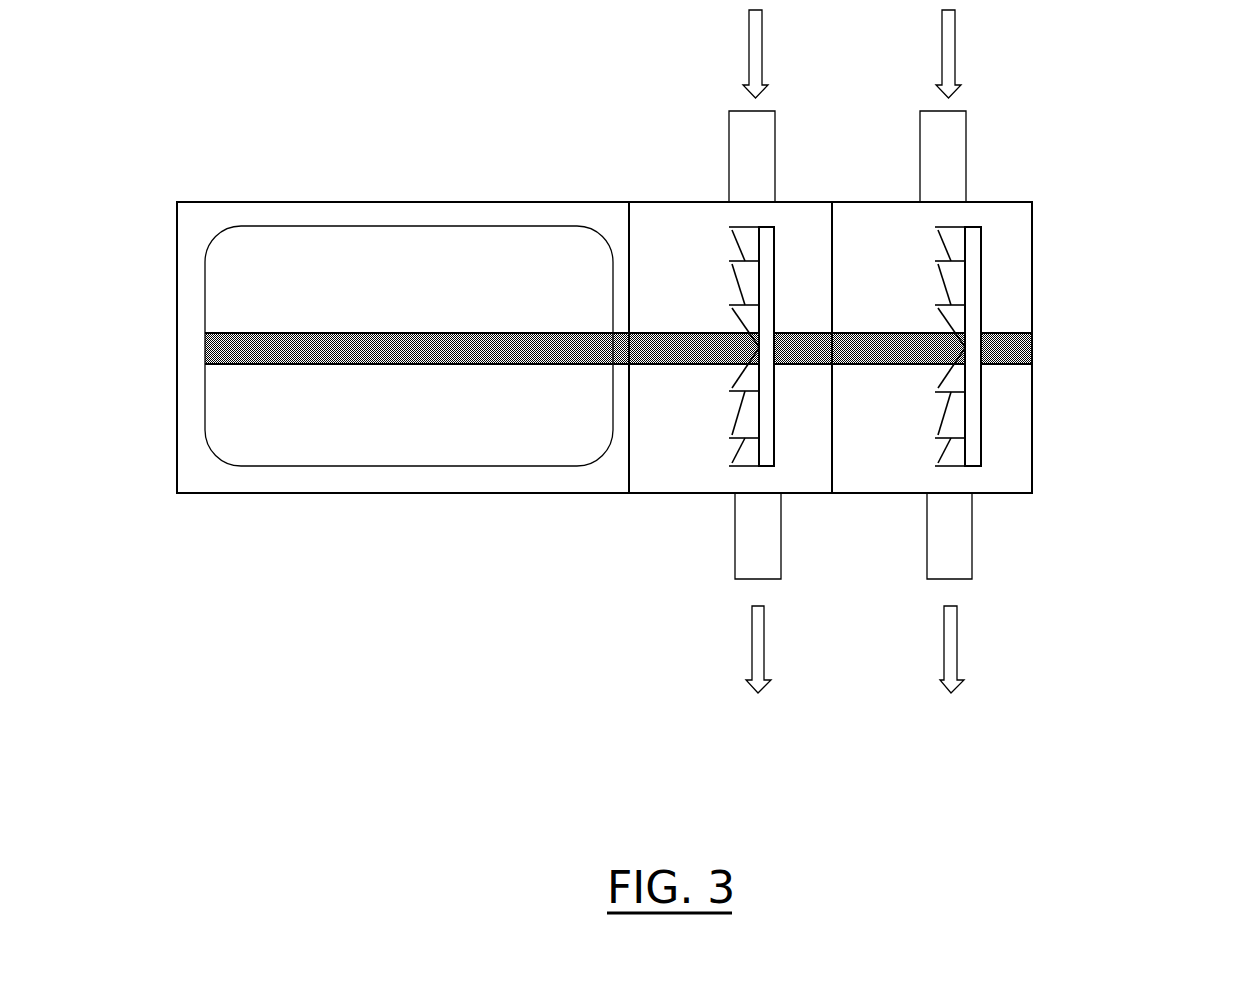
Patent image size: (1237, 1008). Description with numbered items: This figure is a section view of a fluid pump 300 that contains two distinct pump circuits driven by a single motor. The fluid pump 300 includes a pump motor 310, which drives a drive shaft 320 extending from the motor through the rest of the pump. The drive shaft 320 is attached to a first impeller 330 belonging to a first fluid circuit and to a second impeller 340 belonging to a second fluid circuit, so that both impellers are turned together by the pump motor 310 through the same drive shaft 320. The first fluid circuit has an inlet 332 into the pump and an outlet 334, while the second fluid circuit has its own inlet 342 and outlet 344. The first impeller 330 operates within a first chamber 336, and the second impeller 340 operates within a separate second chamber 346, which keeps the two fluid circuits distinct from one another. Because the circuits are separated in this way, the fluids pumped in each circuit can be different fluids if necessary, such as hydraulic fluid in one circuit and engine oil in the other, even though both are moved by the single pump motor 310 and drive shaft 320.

The fluid pump 300 is at (702, 297).
The pump motor 310 is at (409, 299).
The drive shaft 320 is at (675, 312).
The first impeller 330 is at (693, 390).
The inlet 332 is at (697, 106).
The outlet 334 is at (692, 593).
The first chamber 336 is at (702, 321).
The second impeller 340 is at (1025, 386).
The inlet 342 is at (990, 106).
The outlet 344 is at (1012, 593).
The second chamber 346 is at (981, 331).